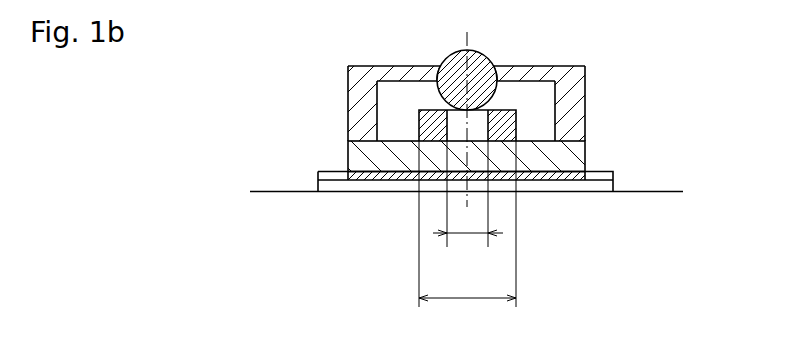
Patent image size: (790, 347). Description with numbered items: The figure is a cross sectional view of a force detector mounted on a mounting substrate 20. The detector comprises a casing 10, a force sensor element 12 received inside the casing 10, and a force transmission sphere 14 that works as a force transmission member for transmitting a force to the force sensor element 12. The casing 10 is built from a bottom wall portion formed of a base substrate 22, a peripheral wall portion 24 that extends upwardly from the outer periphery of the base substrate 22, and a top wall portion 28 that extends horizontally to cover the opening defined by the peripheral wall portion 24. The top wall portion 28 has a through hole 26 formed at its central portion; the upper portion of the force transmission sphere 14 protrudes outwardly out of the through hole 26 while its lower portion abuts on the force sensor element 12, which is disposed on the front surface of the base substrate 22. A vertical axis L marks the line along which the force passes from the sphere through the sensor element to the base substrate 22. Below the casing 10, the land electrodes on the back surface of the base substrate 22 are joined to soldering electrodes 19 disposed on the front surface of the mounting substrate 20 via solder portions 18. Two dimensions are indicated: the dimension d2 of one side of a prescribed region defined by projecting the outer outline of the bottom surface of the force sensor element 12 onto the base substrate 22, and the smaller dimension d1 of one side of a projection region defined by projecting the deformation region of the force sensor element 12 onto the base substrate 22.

The casing 10 is at (466, 73).
The force sensor element 12 is at (512, 112).
The force transmission sphere 14 is at (481, 58).
The solder portions 18 is at (355, 193).
The soldering electrodes 19 is at (400, 193).
The mounting substrate 20 is at (649, 190).
The base substrate 22 is at (348, 152).
The peripheral wall portion 24 is at (348, 97).
The through hole 26 is at (437, 69).
The top wall portion 28 is at (390, 69).
The axis L is at (463, 40).
The dimension of one side of projection region d1 is at (468, 207).
The dimension of one side of prescribed region d2 is at (467, 237).